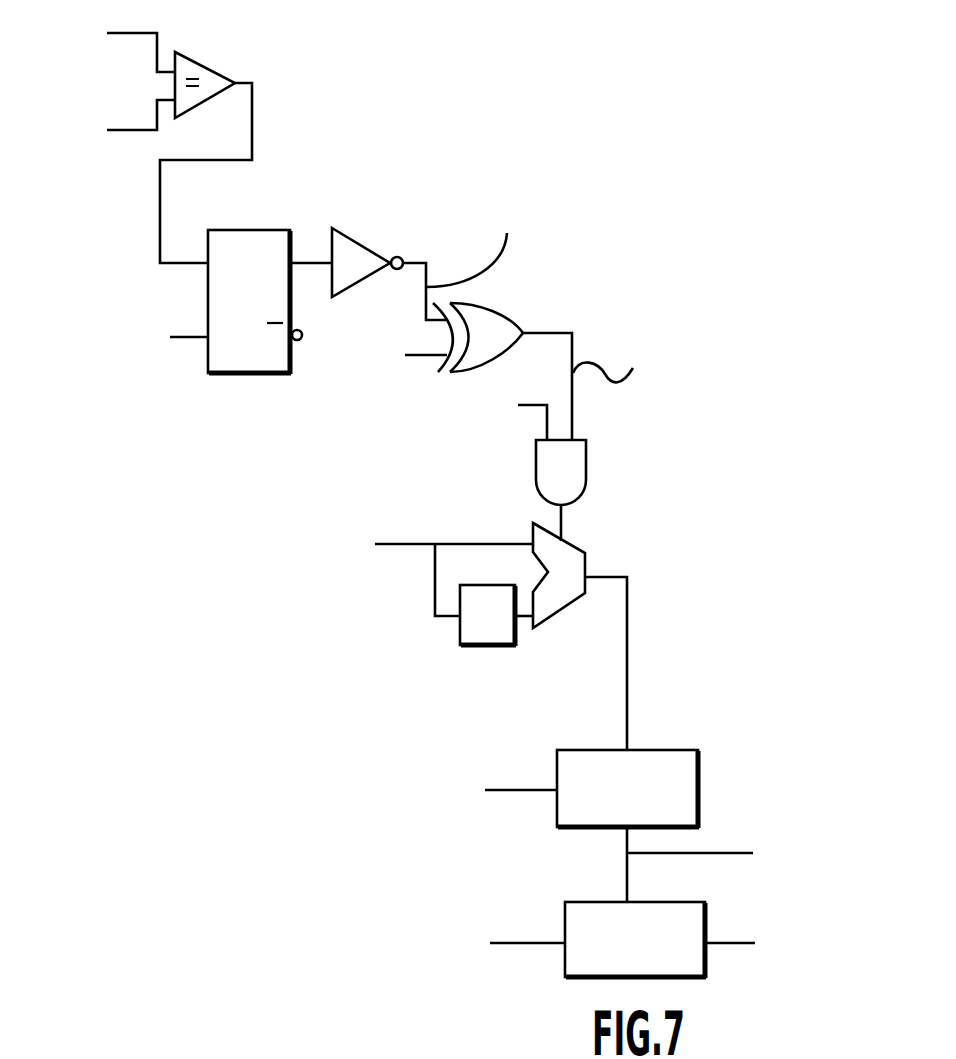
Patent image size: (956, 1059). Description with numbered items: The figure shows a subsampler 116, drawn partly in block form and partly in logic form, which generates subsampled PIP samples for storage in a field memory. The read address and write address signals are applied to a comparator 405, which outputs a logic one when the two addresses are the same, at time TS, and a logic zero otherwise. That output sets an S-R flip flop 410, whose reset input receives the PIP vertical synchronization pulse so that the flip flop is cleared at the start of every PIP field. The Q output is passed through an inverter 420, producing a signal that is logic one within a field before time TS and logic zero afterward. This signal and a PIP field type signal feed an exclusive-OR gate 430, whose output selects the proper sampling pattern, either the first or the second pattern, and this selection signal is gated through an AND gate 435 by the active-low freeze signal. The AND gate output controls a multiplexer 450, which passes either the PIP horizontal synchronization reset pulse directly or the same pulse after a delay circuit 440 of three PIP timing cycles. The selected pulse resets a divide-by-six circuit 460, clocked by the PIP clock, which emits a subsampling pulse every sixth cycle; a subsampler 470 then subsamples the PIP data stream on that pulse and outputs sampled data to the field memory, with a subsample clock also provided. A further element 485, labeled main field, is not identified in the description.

The subsampler 116 is at (460, 111).
The comparator 405 is at (198, 62).
The S-R flip flop 410 is at (243, 228).
The inverter 420 is at (362, 242).
The exclusive-OR gate 430 is at (490, 305).
The AND gate 435 is at (528, 472).
The delay circuit 440 is at (488, 648).
The multiplexer 450 is at (558, 615).
The divide-by-6 circuit 460 is at (603, 750).
The subsampler 470 is at (598, 902).
The main field signal element 485 is at (358, 1042).